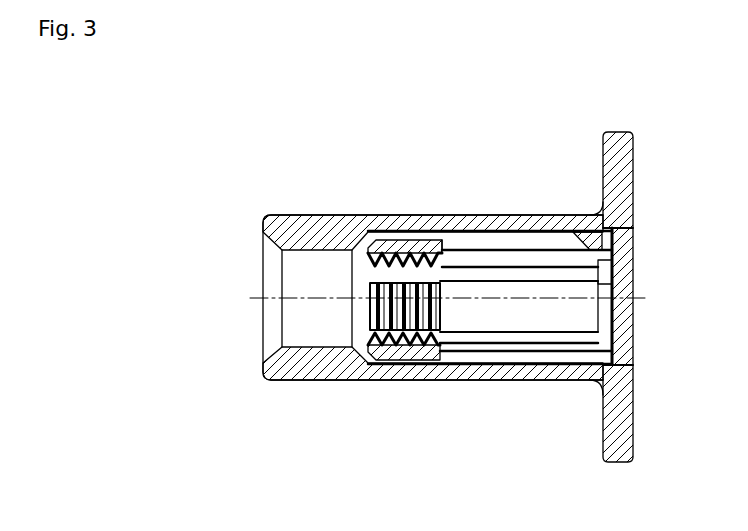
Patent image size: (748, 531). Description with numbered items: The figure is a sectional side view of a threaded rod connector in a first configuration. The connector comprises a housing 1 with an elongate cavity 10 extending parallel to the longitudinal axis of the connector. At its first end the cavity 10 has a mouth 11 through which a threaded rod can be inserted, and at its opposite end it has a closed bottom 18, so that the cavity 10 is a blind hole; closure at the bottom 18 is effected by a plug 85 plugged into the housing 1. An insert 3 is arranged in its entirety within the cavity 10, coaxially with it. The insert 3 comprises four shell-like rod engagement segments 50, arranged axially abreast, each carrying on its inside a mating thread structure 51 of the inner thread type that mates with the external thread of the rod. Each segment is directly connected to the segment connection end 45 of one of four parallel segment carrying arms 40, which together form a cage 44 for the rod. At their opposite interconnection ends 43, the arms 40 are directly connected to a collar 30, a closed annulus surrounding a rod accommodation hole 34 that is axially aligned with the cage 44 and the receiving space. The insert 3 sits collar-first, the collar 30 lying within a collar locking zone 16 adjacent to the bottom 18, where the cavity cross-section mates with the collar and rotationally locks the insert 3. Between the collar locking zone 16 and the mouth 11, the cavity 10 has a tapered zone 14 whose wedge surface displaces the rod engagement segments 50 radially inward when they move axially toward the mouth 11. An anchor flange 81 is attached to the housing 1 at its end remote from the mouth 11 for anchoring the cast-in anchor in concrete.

The housing 1 is at (310, 228).
The insert 3 is at (521, 248).
The cavity 10 is at (334, 272).
The mouth 11 is at (243, 303).
The tapered zone 14 is at (358, 378).
The collar locking zone 16 is at (588, 211).
The bottom 18 is at (613, 318).
The collar 30 is at (594, 358).
The rod accommodation hole 34 is at (583, 297).
The segment carrying arms 40 is at (479, 250).
The interconnection end 43 is at (560, 247).
The cage 44 is at (498, 362).
The segment connection end 45 is at (452, 247).
The rod engagement segments 50 is at (412, 242).
The mating thread structure 51 is at (408, 318).
The anchor flange 81 is at (610, 437).
The plug 85 is at (629, 256).